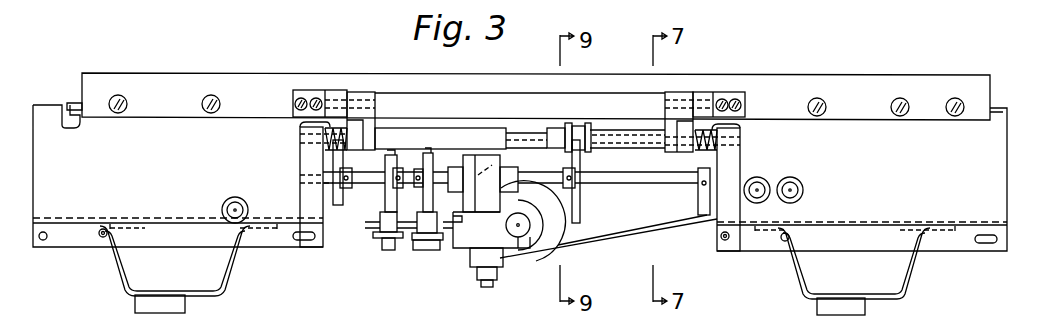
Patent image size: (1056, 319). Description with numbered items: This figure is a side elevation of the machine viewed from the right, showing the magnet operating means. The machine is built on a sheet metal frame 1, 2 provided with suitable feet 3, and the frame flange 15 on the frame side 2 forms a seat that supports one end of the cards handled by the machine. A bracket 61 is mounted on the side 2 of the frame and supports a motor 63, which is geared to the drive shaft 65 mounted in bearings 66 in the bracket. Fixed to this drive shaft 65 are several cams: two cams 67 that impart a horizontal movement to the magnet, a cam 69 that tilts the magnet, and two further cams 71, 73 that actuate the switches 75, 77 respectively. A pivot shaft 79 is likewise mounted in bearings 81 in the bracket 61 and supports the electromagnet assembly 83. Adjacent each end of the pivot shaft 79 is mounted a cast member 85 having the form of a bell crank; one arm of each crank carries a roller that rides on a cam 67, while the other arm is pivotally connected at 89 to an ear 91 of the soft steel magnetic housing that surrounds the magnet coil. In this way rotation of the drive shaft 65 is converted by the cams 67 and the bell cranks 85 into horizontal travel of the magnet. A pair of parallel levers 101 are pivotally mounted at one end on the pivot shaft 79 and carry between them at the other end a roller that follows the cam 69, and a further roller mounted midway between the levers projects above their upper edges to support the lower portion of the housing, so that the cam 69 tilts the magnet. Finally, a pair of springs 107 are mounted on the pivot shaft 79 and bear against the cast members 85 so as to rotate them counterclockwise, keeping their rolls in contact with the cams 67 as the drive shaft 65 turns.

The sheet metal frame 1 is at (295, 318).
The sheet metal frame side 2 is at (993, 163).
The feet 3 is at (235, 279).
The frame flange 15 is at (80, 104).
The bracket 61 is at (310, 190).
The motor 63 is at (500, 266).
The drive shaft 65 is at (561, 176).
The bearings 66 is at (310, 173).
The cams 67 is at (343, 196).
The cam 69 is at (581, 165).
The cam 71 is at (386, 160).
The cam 73 is at (424, 157).
The switch 75 is at (377, 232).
The switch 77 is at (419, 246).
The pivot shaft 79 is at (445, 140).
The bearings 81 is at (300, 140).
The electromagnet assembly 83 is at (854, 73).
The cast member 85 is at (492, 100).
The pivotal connection 89 is at (355, 92).
The ear 91 is at (332, 92).
The parallel levers 101 is at (578, 124).
The springs 107 is at (308, 127).